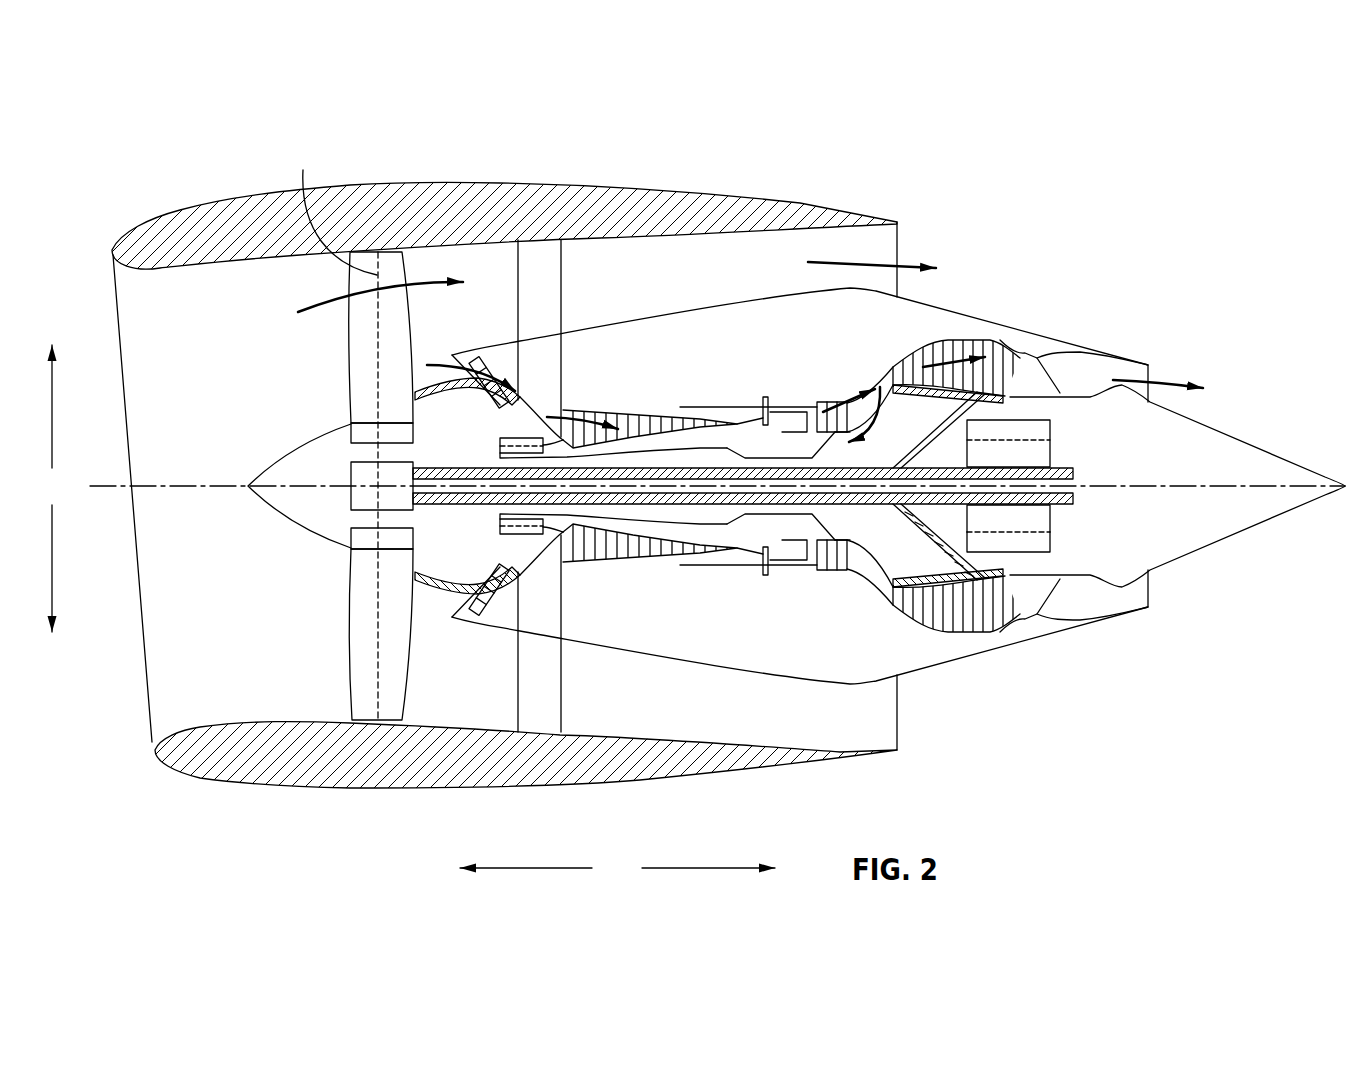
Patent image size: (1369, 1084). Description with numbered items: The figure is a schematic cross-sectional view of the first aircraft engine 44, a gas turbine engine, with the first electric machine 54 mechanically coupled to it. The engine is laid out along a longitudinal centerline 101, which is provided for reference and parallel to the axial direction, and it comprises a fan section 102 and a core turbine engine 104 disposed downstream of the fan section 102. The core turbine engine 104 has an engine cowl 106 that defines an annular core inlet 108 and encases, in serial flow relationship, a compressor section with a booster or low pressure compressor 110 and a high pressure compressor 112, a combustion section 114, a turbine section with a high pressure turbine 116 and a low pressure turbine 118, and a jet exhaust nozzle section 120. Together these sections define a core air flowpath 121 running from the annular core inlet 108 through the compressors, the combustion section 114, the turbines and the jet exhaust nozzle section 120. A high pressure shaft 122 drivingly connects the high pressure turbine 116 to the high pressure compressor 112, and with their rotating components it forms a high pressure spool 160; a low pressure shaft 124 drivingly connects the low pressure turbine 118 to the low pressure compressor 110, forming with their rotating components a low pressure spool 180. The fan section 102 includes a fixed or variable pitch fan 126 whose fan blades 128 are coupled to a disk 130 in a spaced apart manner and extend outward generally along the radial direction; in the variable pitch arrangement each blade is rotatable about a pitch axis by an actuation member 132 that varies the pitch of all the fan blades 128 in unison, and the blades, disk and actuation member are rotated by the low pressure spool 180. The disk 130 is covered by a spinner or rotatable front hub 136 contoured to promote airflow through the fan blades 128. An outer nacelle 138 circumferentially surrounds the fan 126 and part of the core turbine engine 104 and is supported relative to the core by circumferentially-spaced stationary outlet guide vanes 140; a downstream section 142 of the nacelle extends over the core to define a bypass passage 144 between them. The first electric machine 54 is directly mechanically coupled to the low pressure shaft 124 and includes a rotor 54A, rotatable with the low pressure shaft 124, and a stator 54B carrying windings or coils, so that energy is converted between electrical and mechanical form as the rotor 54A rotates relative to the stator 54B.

The first aircraft engine 44 is at (1132, 157).
The first electric machine 54 is at (1056, 412).
The rotor 54A is at (1043, 518).
The stator 54B is at (1043, 540).
The longitudinal centerline 101 is at (1120, 480).
The fan section 102 is at (293, 268).
The core turbine engine 104 is at (688, 283).
The engine cowl 106 is at (745, 668).
The annular core inlet 108 is at (461, 605).
The low pressure compressor 110 is at (497, 615).
The high pressure compressor 112 is at (594, 559).
The combustion section 114 is at (787, 557).
The high pressure turbine 116 is at (852, 567).
The low pressure turbine 118 is at (991, 629).
The jet exhaust nozzle section 120 is at (1053, 602).
The core air flowpath 121 is at (544, 569).
The high pressure shaft 122 is at (790, 455).
The low pressure shaft 124 is at (1063, 467).
The fan 126 is at (314, 486).
The fan blades 128 is at (347, 662).
The disk 130 is at (360, 433).
The actuation member 132 is at (347, 473).
The rotatable front hub 136 is at (257, 500).
The outer nacelle 138 is at (407, 793).
The outlet guide vanes 140 is at (560, 270).
The downstream section 142 is at (820, 203).
The bypass passage 144 is at (776, 271).
The high pressure spool 160 is at (890, 368).
The low pressure spool 180 is at (984, 412).